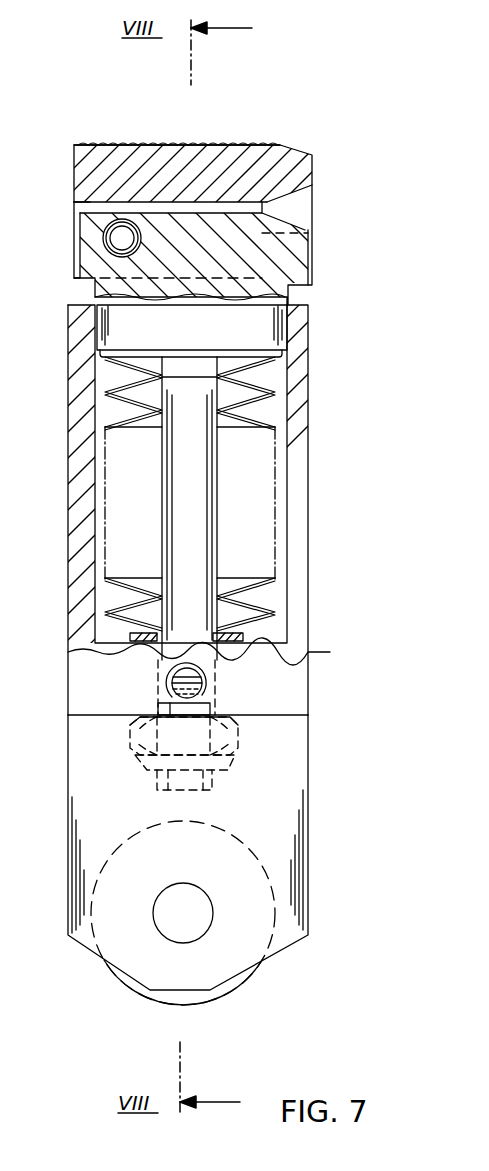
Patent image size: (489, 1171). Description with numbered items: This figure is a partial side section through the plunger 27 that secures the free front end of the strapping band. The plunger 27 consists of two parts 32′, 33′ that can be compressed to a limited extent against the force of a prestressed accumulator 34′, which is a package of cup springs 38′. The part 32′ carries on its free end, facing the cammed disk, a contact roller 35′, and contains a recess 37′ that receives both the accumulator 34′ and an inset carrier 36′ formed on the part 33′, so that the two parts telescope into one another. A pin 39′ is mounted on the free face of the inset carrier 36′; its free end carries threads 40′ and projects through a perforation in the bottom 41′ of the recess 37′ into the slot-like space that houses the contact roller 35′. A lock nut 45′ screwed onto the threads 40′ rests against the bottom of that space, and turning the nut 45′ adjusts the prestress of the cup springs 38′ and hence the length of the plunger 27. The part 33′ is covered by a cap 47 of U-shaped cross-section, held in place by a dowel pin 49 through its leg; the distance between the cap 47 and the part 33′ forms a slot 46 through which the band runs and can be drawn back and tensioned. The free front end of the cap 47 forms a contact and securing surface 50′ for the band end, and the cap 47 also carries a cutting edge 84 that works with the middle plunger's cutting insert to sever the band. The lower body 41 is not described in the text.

The plunger 27 is at (62, 492).
The part of plunger 32′ is at (80, 678).
The part of plunger 33′ is at (96, 268).
The accumulator 34′ is at (104, 415).
The contact roller 35′ is at (162, 997).
The inset carrier 36′ is at (68, 357).
The recess 37′ is at (110, 592).
The cup springs 38′ is at (150, 427).
The pin 39′ is at (172, 506).
The threads 40′ is at (154, 700).
The lower body 41 is at (273, 718).
The bottom of the recess 41′ is at (110, 632).
The lock nut 45′ is at (134, 740).
The slot 46 is at (134, 211).
The cap 47 is at (222, 163).
The dowel pin 49 is at (104, 238).
The contact and securing surface 50′ is at (107, 145).
The cutting edge 84 is at (74, 202).